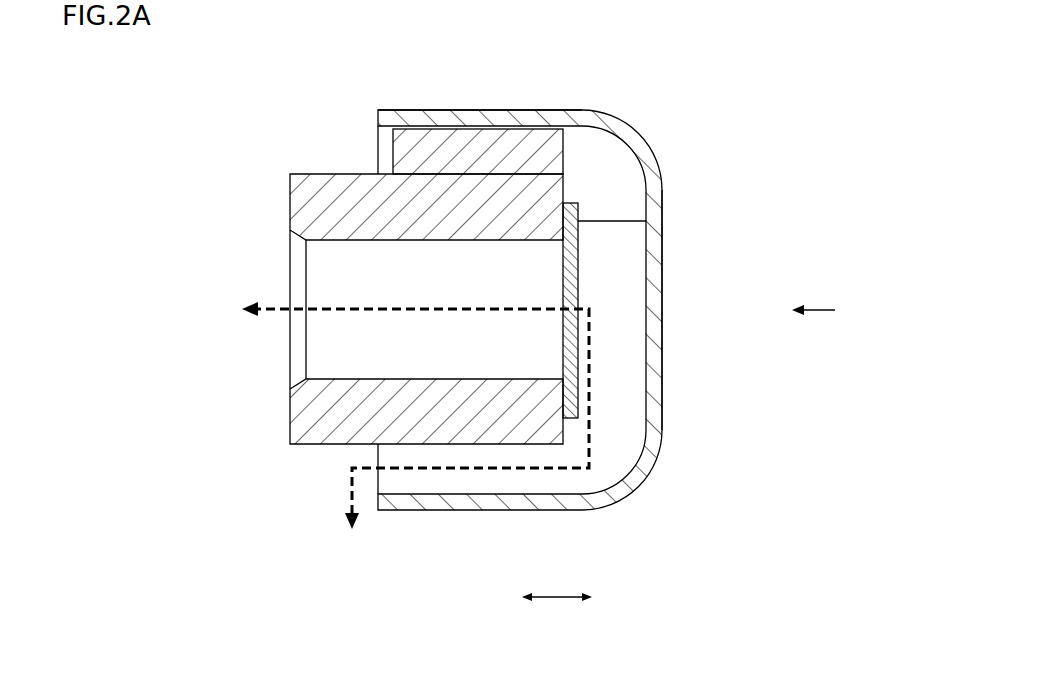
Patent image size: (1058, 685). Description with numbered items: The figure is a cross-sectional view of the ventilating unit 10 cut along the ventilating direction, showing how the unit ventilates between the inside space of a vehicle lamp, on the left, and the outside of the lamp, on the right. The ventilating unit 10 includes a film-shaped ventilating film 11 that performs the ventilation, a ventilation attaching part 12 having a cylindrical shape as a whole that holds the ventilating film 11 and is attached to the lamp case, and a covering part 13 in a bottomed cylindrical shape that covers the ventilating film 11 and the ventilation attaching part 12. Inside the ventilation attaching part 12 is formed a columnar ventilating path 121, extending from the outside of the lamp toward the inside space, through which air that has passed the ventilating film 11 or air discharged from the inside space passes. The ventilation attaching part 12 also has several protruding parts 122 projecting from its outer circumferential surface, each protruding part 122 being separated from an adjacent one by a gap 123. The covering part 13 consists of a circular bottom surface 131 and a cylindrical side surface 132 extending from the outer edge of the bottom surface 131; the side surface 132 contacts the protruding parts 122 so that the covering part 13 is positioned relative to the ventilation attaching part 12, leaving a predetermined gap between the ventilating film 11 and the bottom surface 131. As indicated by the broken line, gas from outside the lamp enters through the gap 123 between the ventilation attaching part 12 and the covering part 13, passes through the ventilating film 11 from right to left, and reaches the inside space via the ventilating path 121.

The ventilating unit 10 is at (768, 94).
The ventilating film 11 is at (577, 360).
The ventilation attaching part 12 is at (369, 353).
The ventilating path 121 is at (318, 278).
The protruding part 122 is at (565, 143).
The gap 123 is at (459, 142).
The covering part 13 is at (568, 271).
The bottom surface 131 is at (662, 267).
The side surface 132 is at (517, 110).